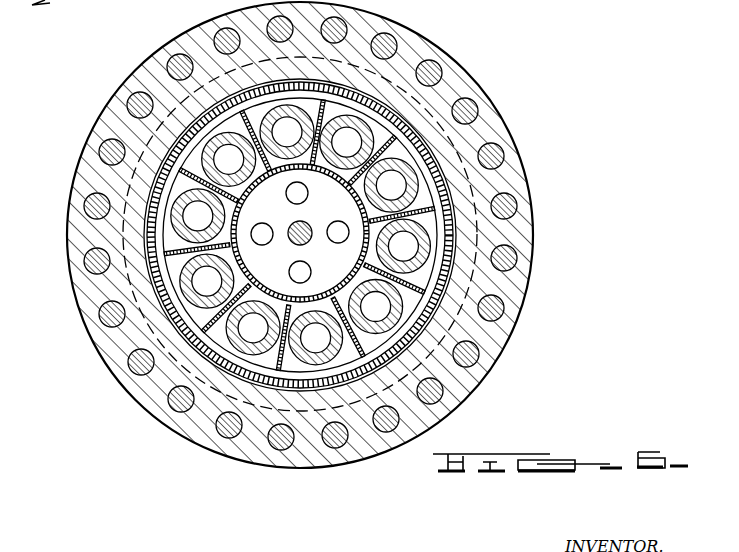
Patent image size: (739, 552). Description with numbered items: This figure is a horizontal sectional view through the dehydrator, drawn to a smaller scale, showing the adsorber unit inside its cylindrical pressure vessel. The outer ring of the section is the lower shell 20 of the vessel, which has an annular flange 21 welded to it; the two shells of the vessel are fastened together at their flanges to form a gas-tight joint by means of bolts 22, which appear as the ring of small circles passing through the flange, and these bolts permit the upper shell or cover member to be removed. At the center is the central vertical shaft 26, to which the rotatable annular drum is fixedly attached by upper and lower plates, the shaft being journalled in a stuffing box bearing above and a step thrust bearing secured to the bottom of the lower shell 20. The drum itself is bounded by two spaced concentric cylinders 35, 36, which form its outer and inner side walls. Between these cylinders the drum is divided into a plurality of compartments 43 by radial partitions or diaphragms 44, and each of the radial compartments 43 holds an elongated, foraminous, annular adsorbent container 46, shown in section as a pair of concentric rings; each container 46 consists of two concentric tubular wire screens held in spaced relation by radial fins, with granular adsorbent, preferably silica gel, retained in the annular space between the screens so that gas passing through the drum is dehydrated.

The lower shell 20 is at (138, 153).
The annular flange 21 is at (508, 139).
The bolts 22 is at (517, 247).
The central vertical shaft 26 is at (308, 224).
The outer concentric cylinder 35 is at (159, 185).
The inner concentric cylinder 36 is at (240, 252).
The compartments 43 is at (392, 138).
The radial partitions 44 is at (338, 103).
The adsorbent container 46 is at (382, 370).